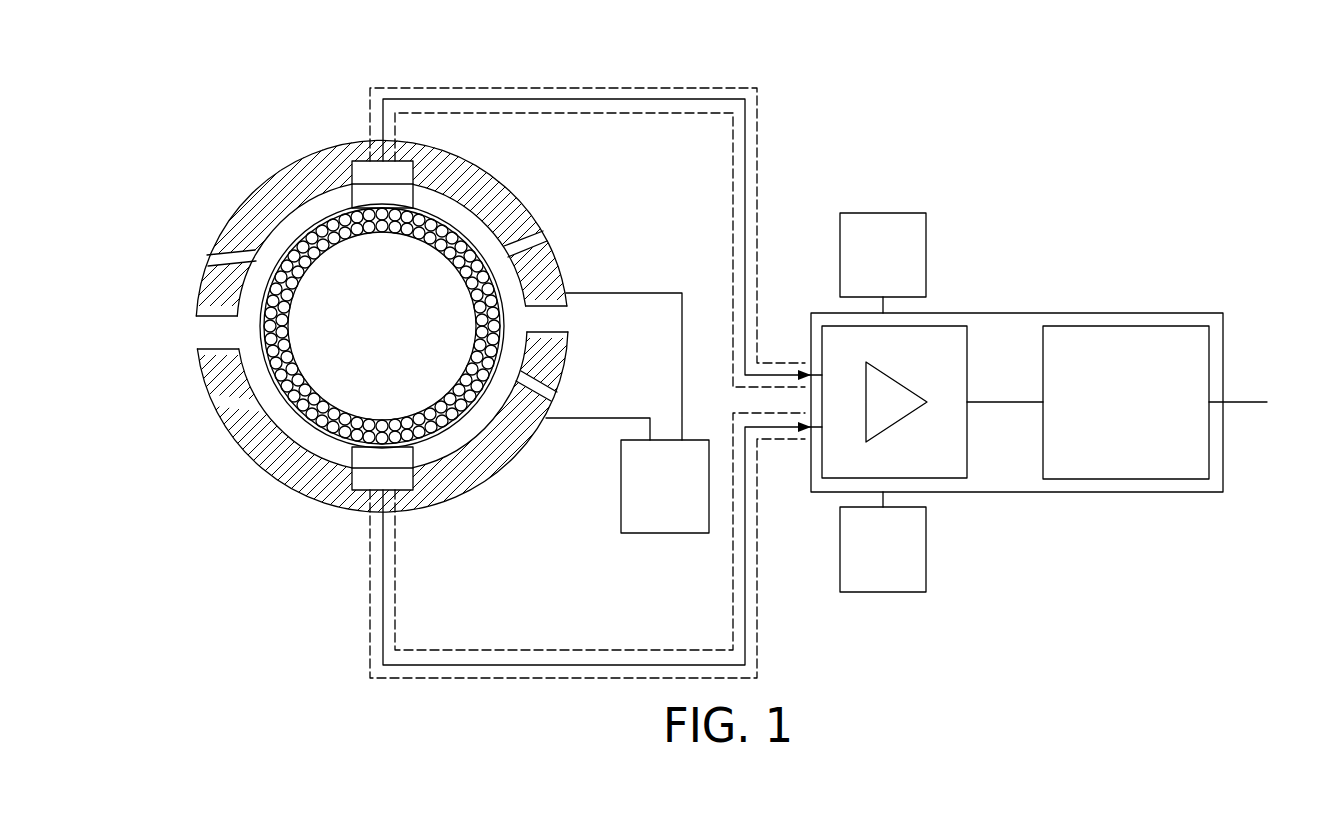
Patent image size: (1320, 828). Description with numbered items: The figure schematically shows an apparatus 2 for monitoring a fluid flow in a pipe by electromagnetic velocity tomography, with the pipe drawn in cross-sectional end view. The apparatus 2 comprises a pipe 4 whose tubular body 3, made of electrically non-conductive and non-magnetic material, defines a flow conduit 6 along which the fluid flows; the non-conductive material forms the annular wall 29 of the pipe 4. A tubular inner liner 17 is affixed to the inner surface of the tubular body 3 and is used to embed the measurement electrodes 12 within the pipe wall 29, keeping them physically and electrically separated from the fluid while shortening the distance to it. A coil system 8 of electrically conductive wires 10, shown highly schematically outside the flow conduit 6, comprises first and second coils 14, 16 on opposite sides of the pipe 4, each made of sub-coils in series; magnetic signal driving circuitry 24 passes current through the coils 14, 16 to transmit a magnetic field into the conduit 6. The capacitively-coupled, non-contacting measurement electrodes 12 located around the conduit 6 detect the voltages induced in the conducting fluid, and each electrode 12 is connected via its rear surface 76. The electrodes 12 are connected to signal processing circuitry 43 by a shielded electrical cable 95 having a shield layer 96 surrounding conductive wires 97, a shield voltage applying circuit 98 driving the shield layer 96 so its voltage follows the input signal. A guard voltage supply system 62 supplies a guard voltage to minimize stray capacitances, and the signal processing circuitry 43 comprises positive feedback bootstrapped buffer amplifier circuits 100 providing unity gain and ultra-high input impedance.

The apparatus 2 is at (596, 339).
The tubular body 3 is at (282, 402).
The pipe 4 is at (322, 218).
The flow conduit 6 is at (427, 385).
The coil system 8 is at (236, 221).
The electrically conductive wires 10 is at (518, 219).
The measurement electrodes 12 is at (254, 327).
The first coil 14 is at (568, 276).
The second coil 16 is at (574, 358).
The tubular inner liner 17 is at (295, 313).
The magnetic signal driving circuitry 24 is at (648, 501).
The annular wall 29 is at (470, 203).
The signal processing circuitry 43 is at (1037, 309).
The guard voltage supply system 62 is at (866, 267).
The rear surface 76 is at (372, 462).
The shielded electrical cable 95 is at (572, 99).
The shield layer 96 is at (505, 88).
The electrically conductive wires 97 is at (673, 113).
The shield voltage applying circuit 98 is at (866, 562).
The positive feedback bootstrapped buffer amplifier circuits 100 is at (914, 436).